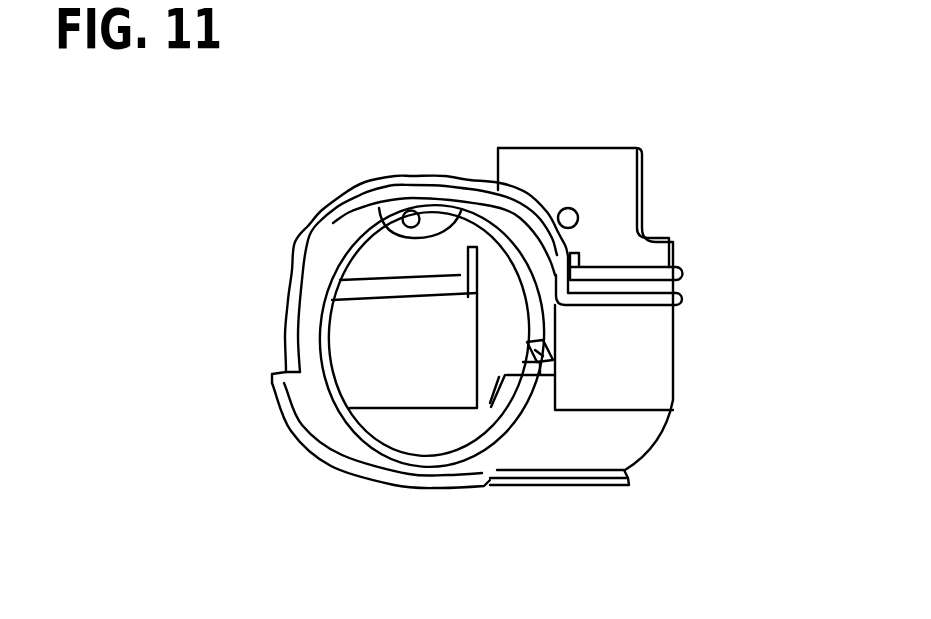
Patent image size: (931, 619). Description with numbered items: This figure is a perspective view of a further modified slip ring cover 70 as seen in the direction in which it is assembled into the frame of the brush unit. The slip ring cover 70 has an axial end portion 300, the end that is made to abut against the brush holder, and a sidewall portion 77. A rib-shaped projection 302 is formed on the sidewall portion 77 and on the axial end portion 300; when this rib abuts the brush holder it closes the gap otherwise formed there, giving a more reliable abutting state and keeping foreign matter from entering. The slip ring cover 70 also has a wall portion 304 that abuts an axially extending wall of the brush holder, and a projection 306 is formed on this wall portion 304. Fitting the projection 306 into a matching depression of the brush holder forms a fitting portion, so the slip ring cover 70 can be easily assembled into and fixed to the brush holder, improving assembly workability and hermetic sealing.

The slip ring cover 70 is at (677, 187).
The sidewall portion 77 is at (653, 363).
The axial end portion 300 is at (468, 187).
The rib-shaped projection 302 is at (400, 197).
The wall portion 304 is at (537, 328).
The projection 306 is at (284, 372).